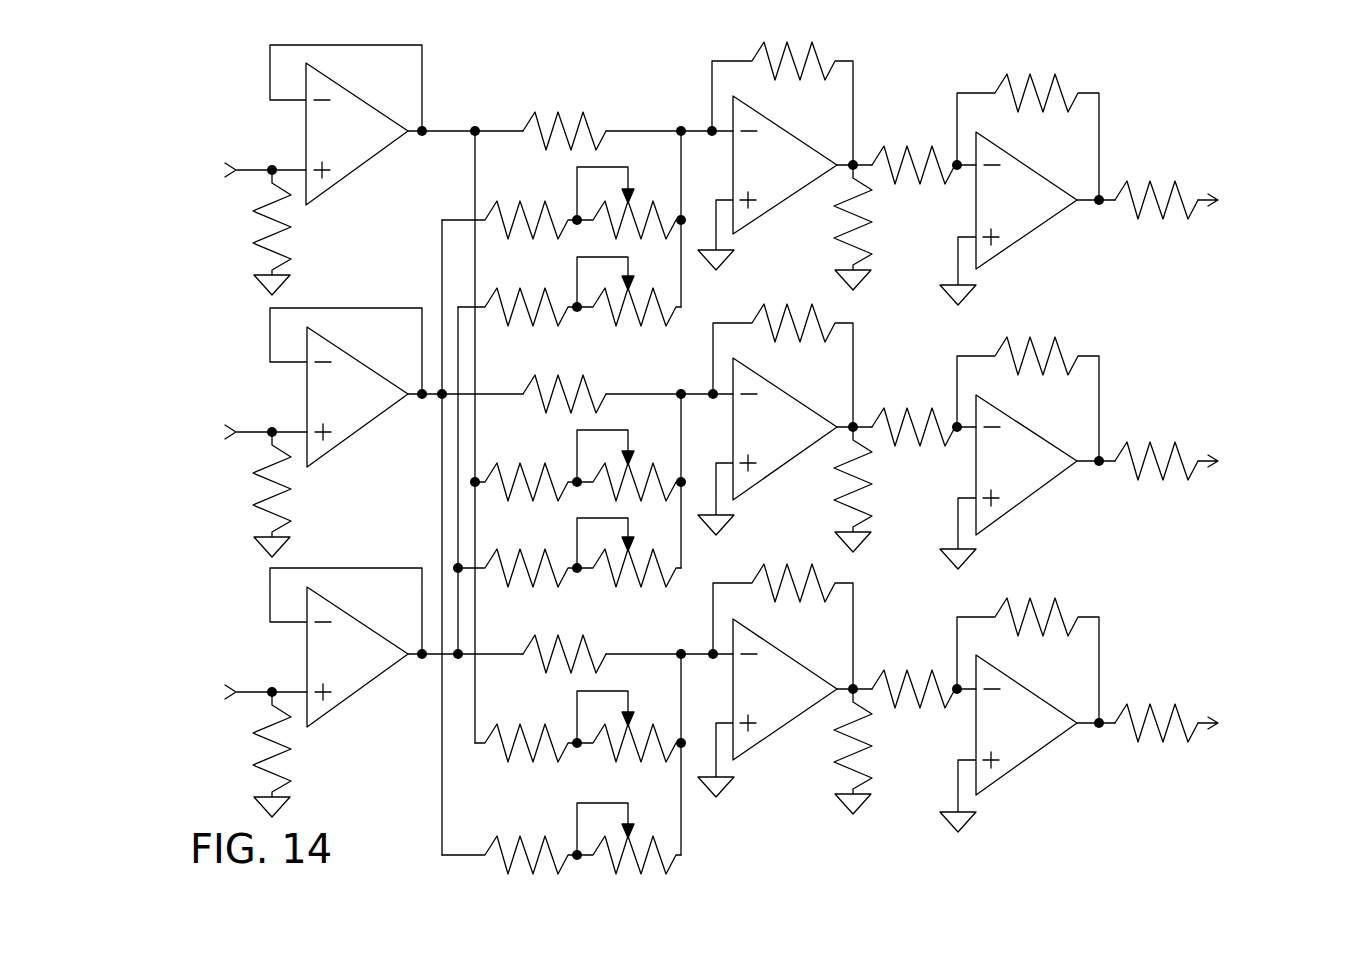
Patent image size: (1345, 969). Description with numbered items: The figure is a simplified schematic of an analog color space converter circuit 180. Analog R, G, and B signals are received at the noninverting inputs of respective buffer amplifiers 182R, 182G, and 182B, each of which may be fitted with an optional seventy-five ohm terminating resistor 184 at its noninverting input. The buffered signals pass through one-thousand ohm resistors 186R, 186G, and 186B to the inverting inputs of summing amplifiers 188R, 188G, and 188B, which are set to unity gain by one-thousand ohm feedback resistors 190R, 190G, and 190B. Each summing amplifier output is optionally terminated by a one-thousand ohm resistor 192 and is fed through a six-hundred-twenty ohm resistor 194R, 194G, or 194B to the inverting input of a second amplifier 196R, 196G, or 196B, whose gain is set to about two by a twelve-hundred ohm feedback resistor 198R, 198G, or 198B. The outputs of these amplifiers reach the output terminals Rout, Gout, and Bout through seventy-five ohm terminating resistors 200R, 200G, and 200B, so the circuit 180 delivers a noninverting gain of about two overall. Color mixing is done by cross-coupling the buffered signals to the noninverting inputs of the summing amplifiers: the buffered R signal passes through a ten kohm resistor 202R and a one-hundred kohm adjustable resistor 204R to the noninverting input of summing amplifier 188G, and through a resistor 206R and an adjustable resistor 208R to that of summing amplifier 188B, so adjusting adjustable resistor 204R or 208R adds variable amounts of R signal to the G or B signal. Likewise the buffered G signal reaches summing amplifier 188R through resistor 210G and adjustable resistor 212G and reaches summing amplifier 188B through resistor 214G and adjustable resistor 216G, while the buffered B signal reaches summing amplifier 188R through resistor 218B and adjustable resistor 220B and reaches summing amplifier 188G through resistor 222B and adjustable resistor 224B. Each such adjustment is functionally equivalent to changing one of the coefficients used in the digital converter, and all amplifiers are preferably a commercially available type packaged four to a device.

The analog color space converter circuit 180 is at (1124, 64).
The buffer amplifier 182R is at (352, 118).
The buffer amplifier 182G is at (352, 380).
The buffer amplifier 182B is at (352, 640).
The terminating resistor 184 is at (280, 238).
The resistor 186R is at (563, 112).
The resistor 186G is at (563, 378).
The resistor 186B is at (540, 647).
The summing amplifier 188R is at (785, 150).
The summing amplifier 188G is at (785, 413).
The summing amplifier 188B is at (785, 680).
The feedback resistor 190R is at (788, 58).
The feedback resistor 190G is at (788, 305).
The feedback resistor 190B is at (788, 565).
The resistor 192 is at (860, 204).
The resistor 194R is at (912, 150).
The resistor 194G is at (912, 412).
The resistor 194B is at (912, 675).
The amplifier 196R is at (1035, 185).
The amplifier 196G is at (1035, 445).
The amplifier 196B is at (1035, 700).
The feedback resistor 198R is at (1035, 82).
The feedback resistor 198G is at (1035, 345).
The feedback resistor 198B is at (1035, 605).
The terminating resistor 200R is at (1160, 185).
The terminating resistor 200G is at (1162, 446).
The terminating resistor 200B is at (1162, 708).
The resistor 202R is at (523, 470).
The adjustable resistor 204R is at (630, 475).
The resistor 206R is at (523, 735).
The adjustable resistor 208R is at (630, 735).
The resistor 210G is at (523, 210).
The adjustable resistor 212G is at (630, 213).
The resistor 214G is at (523, 848).
The adjustable resistor 216G is at (630, 845).
The resistor 218B is at (523, 300).
The adjustable resistor 220B is at (640, 318).
The resistor 222B is at (523, 560).
The adjustable resistor 224B is at (640, 578).